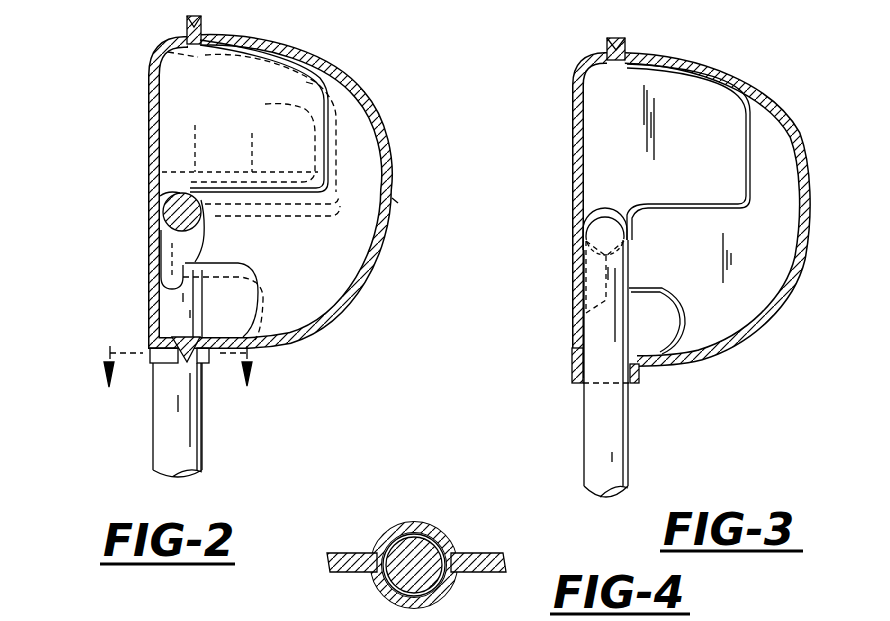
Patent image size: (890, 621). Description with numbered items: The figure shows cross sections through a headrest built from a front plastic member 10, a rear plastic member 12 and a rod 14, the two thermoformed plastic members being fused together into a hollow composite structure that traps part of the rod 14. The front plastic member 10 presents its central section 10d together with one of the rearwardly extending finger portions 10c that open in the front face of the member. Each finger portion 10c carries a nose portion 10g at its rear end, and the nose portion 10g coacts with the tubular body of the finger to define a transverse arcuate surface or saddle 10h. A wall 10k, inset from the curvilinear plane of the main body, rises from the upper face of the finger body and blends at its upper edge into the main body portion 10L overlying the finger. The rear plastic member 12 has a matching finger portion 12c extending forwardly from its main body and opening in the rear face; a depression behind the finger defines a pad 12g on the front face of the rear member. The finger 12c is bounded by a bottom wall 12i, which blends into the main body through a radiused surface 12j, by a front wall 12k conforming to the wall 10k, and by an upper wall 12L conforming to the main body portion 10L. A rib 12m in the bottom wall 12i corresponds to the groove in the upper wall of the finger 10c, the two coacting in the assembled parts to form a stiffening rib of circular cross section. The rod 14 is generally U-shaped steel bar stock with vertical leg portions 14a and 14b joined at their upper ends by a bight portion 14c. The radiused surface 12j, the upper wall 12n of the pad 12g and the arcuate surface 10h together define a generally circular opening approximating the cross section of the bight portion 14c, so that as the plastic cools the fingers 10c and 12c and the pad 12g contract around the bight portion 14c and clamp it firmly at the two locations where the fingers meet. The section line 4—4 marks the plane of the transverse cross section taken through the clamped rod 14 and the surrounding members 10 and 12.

In FIG. 2, the front plastic member 10 is at (446, 141).
In FIG. 4, the front plastic member 10 is at (356, 573).
In FIG. 2, the main body portion 10L is at (312, 84).
In FIG. 2, the finger portion 10c is at (285, 178).
In FIG. 2, the central section 10d is at (398, 203).
In FIG. 3, the central section 10d is at (806, 177).
In FIG. 2, the nose portion 10g is at (159, 268).
In FIG. 2, the transverse arcuate surface or saddle 10h is at (212, 211).
In FIG. 2, the wall 10k is at (340, 145).
In FIG. 4, the rear plastic member 12 is at (471, 556).
In FIG. 2, the upper wall 12L is at (152, 39).
In FIG. 3, the upper wall 12L is at (713, 77).
In FIG. 2, the finger portion 12c is at (298, 92).
In FIG. 2, the pad 12g is at (178, 246).
In FIG. 2, the bottom wall 12i is at (240, 143).
In FIG. 2, the radiused surface 12j is at (166, 204).
In FIG. 2, the front wall 12k is at (252, 130).
In FIG. 2, the rib 12m is at (210, 138).
In FIG. 2, the upper wall 12n is at (166, 238).
In FIG. 2, the rod 14 is at (141, 433).
In FIG. 4, the rod 14 is at (413, 522).
In FIG. 3, the leg portion 14a is at (593, 450).
In FIG. 2, the leg portion 14b is at (190, 455).
In FIG. 2, the bight portion 14c is at (162, 219).
In FIG. 3, the bight portion 14c is at (590, 233).
In FIG. 2, the section line 4— 4 is at (176, 380).